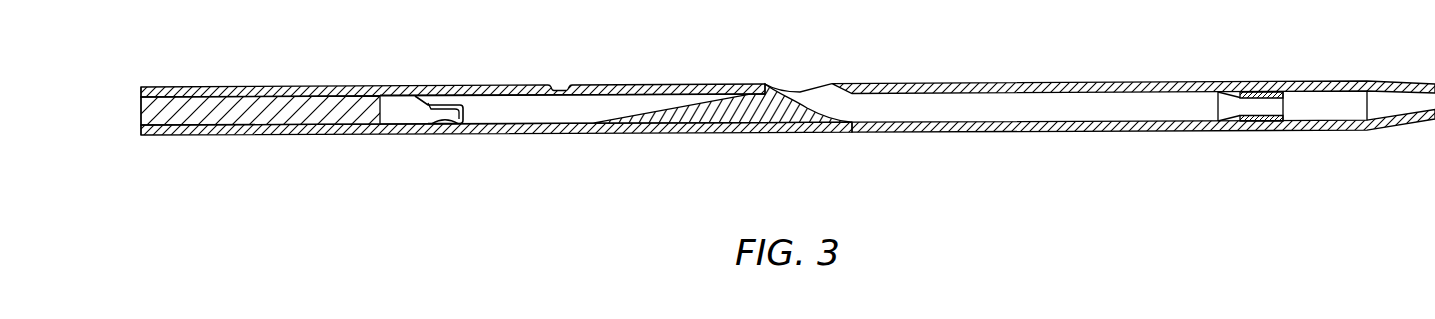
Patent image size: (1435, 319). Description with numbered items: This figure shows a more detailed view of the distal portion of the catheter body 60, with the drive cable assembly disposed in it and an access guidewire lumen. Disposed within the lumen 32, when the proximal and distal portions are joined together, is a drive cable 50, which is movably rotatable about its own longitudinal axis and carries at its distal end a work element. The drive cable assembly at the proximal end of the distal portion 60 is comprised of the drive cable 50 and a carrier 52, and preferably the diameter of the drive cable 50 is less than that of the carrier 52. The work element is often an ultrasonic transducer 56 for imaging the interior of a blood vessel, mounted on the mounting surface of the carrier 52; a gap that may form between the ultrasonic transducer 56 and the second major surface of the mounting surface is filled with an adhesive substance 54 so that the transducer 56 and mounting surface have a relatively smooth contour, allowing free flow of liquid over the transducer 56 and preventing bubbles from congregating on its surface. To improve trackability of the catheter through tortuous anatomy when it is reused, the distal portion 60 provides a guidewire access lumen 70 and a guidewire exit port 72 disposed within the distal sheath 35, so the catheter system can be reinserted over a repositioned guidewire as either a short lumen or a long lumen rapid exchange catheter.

The drive cable 50 is at (237, 88).
The carrier 52 is at (398, 114).
The adhesive substance 54 is at (425, 96).
The ultrasonic transducer 56 is at (448, 105).
The lumen 32 is at (555, 112).
The distal portion of the catheter body 60 is at (712, 43).
The guidewire exit port 72 is at (800, 92).
The distal sheath 35 is at (1128, 81).
The guidewire access lumen 70 is at (1002, 112).